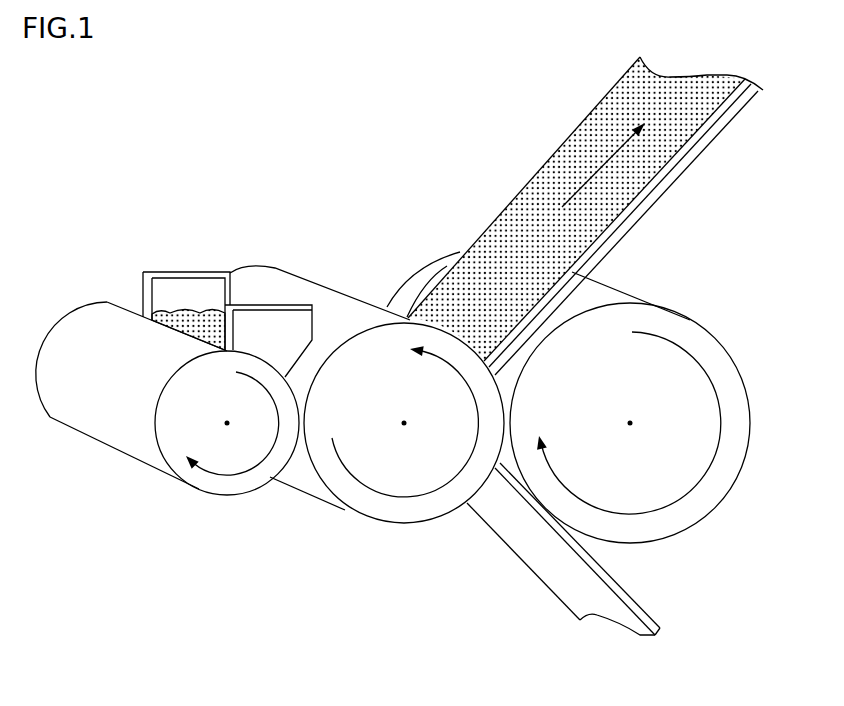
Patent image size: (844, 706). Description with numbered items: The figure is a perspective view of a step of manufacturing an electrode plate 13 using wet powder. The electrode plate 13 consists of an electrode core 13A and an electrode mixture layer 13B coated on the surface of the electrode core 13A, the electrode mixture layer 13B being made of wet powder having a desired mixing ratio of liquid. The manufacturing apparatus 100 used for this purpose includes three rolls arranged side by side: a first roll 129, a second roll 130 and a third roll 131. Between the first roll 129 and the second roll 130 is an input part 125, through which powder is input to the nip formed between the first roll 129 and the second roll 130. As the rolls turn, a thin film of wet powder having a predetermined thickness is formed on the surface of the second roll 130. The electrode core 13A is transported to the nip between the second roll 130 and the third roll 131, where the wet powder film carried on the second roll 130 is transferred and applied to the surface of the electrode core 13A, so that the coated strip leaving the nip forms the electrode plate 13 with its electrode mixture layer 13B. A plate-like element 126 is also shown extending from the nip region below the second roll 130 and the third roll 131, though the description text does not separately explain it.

The manufacturing apparatus 100 is at (303, 523).
The input part 125 is at (192, 293).
The guide plate 126 is at (555, 575).
The first roll 129 is at (177, 443).
The second roll 130 is at (374, 355).
The third roll 131 is at (737, 457).
The electrode plate 13 is at (585, 201).
The electrode core 13A is at (705, 77).
The electrode mixture layer 13B is at (643, 82).